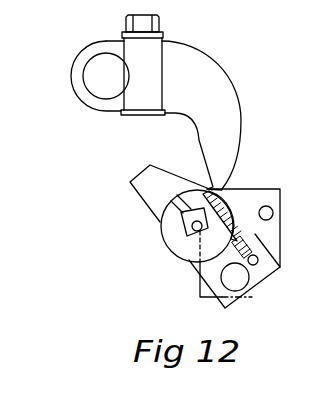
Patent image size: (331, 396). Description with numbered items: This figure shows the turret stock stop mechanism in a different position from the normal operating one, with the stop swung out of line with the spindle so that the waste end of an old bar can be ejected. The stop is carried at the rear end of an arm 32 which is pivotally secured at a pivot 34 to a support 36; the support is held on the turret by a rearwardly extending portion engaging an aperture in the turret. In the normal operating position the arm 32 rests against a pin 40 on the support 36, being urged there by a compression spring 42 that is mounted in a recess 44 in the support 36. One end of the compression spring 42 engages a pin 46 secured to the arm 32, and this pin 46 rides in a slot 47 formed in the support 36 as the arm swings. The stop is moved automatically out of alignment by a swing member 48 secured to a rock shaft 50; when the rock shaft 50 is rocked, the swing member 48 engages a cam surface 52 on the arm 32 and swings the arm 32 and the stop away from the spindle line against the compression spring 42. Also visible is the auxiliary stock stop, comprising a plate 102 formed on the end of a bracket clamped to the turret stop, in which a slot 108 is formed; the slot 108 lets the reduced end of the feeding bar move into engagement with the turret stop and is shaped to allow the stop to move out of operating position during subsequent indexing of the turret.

The arm 32 is at (147, 189).
The pivot 34 is at (235, 283).
The support 36 is at (257, 193).
The pin 40 is at (273, 213).
The compression spring 42 is at (244, 245).
The recess 44 is at (222, 250).
The pin 46 is at (258, 260).
The slot 47 is at (240, 250).
The swing member 48 is at (209, 84).
The rock shaft 50 is at (99, 68).
The cam surface 52 is at (203, 182).
The plate 102 is at (183, 227).
The slot 108 is at (188, 223).